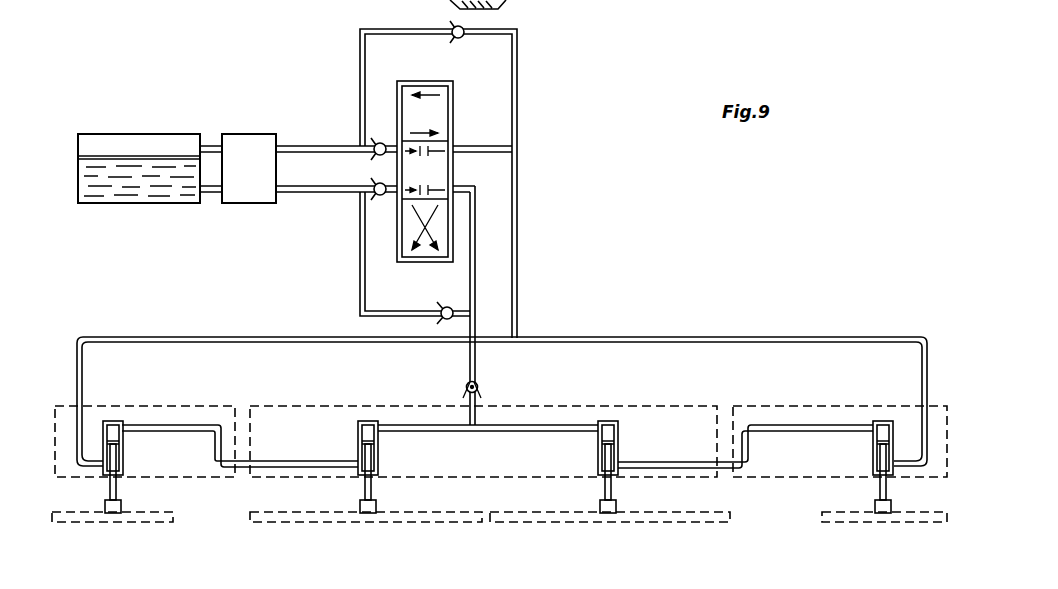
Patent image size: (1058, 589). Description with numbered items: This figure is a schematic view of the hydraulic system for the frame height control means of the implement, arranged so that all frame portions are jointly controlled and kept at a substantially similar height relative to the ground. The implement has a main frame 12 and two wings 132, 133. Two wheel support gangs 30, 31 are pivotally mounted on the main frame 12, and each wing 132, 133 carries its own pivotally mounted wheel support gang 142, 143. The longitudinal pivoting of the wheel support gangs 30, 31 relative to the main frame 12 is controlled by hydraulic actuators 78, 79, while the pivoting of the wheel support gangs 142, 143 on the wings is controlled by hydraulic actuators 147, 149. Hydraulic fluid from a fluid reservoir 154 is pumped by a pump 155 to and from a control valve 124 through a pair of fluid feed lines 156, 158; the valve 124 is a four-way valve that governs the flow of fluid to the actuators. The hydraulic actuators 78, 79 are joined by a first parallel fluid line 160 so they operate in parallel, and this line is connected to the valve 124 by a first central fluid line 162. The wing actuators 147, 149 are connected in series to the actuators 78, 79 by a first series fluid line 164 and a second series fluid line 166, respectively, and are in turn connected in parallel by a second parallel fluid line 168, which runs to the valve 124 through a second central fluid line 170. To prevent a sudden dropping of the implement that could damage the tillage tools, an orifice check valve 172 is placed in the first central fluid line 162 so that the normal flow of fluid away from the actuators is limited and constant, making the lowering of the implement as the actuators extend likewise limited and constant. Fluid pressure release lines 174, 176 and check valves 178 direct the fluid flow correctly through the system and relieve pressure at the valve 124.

The main frame 12 is at (494, 484).
The wheel support gang 30 is at (433, 512).
The wheel support gang 31 is at (670, 500).
The hydraulic actuator 78 is at (368, 420).
The hydraulic actuator 79 is at (613, 420).
The control valve 124 is at (422, 80).
The wing 132 is at (198, 484).
The wing 133 is at (813, 486).
The wheel support gang 142 is at (149, 504).
The wheel support gang 143 is at (843, 513).
The hydraulic actuator 147 is at (113, 418).
The hydraulic actuator 149 is at (881, 420).
The fluid reservoir 154 is at (152, 204).
The pump 155 is at (244, 204).
The fluid feed line 156 is at (310, 145).
The fluid feed line 158 is at (316, 195).
The first parallel fluid line 160 is at (510, 432).
The first central fluid line 162 is at (476, 288).
The first series fluid line 164 is at (214, 446).
The second series fluid line 166 is at (752, 448).
The second parallel fluid line 168 is at (556, 337).
The second central fluid line 170 is at (518, 246).
The orifice check valve 172 is at (483, 386).
The fluid pressure release line 174 is at (359, 48).
The fluid pressure release line 176 is at (358, 258).
The check valve 178 is at (462, 37).